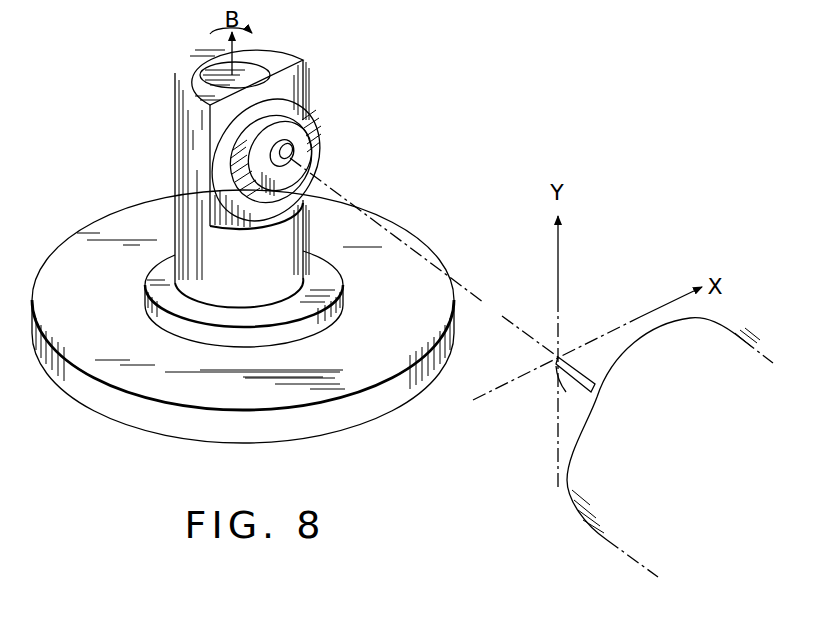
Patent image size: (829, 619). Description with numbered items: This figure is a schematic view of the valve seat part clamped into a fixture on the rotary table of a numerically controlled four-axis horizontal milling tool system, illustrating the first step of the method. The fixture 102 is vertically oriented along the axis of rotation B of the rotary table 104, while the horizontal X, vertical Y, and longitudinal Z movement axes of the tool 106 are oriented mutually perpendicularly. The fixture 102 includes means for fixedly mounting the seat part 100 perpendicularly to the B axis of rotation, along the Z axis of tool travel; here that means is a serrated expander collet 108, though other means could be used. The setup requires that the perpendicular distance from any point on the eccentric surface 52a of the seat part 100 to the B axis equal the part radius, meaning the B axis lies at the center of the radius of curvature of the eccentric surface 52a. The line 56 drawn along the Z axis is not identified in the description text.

The eccentric surface 52a is at (245, 155).
The axis line 56 is at (336, 192).
The seat part 100 is at (316, 95).
The fixture 102 is at (300, 66).
The rotary table 104 is at (107, 212).
The tool 106 is at (573, 373).
The serrated expander collet 108 is at (296, 153).